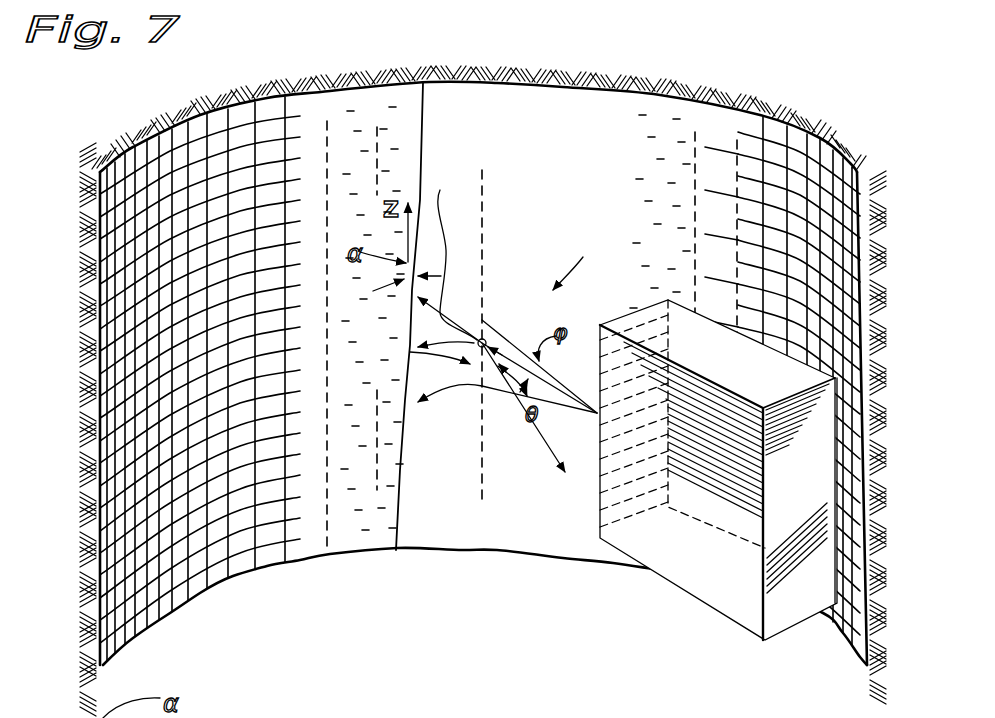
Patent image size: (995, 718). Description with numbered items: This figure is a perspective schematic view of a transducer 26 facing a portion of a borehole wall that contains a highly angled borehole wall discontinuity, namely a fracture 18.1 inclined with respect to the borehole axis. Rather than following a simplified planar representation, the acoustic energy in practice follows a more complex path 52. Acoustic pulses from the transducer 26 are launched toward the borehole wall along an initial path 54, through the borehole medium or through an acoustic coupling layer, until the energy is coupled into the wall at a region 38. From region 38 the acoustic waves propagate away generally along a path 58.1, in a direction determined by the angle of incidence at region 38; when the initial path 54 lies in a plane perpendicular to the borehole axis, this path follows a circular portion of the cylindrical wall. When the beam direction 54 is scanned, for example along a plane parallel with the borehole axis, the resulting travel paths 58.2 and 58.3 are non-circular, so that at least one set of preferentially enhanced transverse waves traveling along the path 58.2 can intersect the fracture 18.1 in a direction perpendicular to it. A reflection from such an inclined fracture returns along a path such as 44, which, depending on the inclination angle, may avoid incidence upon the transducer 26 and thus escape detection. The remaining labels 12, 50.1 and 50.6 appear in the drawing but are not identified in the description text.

The borehole 12 is at (801, 97).
The fracture 18.1 is at (423, 120).
The transducer 26 is at (712, 595).
The region 38 is at (478, 342).
The path 44 is at (547, 451).
The transducer face 50.1 is at (666, 323).
The transducer edge 50.6 is at (645, 513).
The complex path 52 is at (584, 260).
The initial path 54 is at (558, 390).
The path 58.1 is at (436, 338).
The travel path 58.2 is at (451, 250).
The travel path 58.3 is at (443, 398).